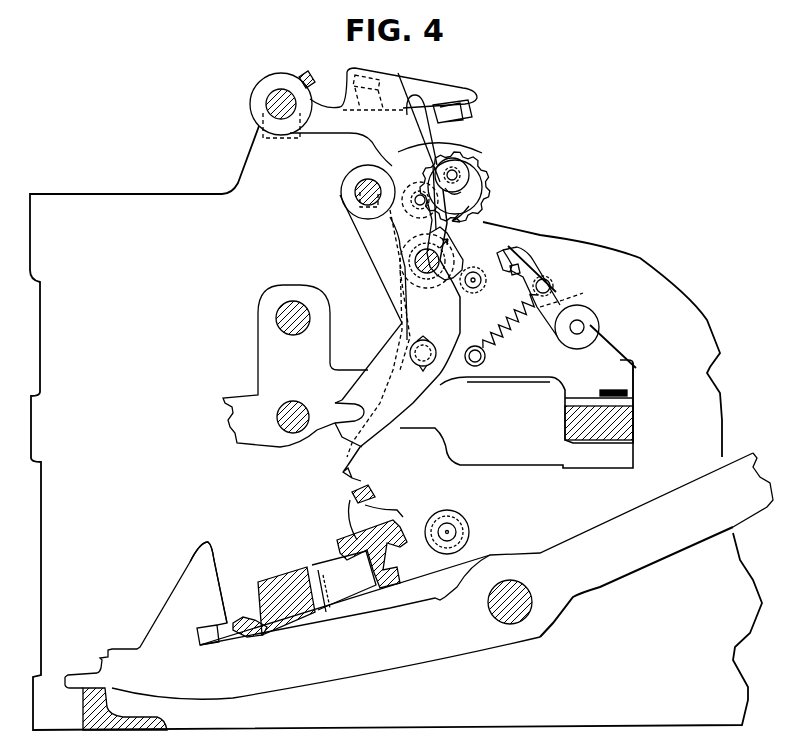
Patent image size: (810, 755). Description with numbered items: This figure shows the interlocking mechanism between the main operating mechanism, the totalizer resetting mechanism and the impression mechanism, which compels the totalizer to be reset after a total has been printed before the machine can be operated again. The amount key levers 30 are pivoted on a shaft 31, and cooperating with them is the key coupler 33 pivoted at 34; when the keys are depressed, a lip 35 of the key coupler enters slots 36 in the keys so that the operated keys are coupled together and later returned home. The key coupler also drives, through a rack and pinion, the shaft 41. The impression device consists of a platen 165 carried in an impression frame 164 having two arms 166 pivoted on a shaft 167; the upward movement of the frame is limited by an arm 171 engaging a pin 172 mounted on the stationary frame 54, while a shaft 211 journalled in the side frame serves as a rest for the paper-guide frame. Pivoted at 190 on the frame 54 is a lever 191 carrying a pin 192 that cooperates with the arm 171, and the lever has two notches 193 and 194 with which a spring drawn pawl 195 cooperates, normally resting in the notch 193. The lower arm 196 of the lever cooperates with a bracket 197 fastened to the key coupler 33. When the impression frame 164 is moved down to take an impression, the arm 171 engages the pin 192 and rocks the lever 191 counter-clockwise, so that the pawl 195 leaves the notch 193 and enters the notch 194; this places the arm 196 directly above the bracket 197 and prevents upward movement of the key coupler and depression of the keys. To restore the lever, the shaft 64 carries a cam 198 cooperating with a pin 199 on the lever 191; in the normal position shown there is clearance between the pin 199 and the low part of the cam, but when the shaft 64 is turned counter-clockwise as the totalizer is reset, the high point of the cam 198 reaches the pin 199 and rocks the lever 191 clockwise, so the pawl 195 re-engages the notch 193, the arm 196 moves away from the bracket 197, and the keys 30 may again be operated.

The amount key lever 30 is at (587, 543).
The shaft 31 is at (510, 583).
The key coupler 33 is at (294, 572).
The pivot 34 is at (443, 530).
The lip 35 is at (254, 611).
The slot 36 is at (212, 628).
The shaft 41 is at (288, 403).
The stationary frame 54 is at (605, 343).
The shaft 64 is at (422, 268).
The impression frame 164 is at (436, 90).
The platen 165 is at (465, 126).
The arm 166 is at (357, 130).
The shaft 167 is at (268, 104).
The arm 171 is at (430, 150).
The pin 172 is at (458, 176).
The pivot 190 is at (418, 353).
The lever 191 is at (408, 312).
The pin 192 is at (478, 197).
The notch 193 is at (507, 250).
The notch 194 is at (521, 264).
The spring drawn pawl 195 is at (562, 292).
The lower arm 196 is at (348, 472).
The bracket 197 is at (373, 488).
The cam 198 is at (462, 246).
The pin 199 is at (460, 288).
The shaft 211 is at (357, 187).